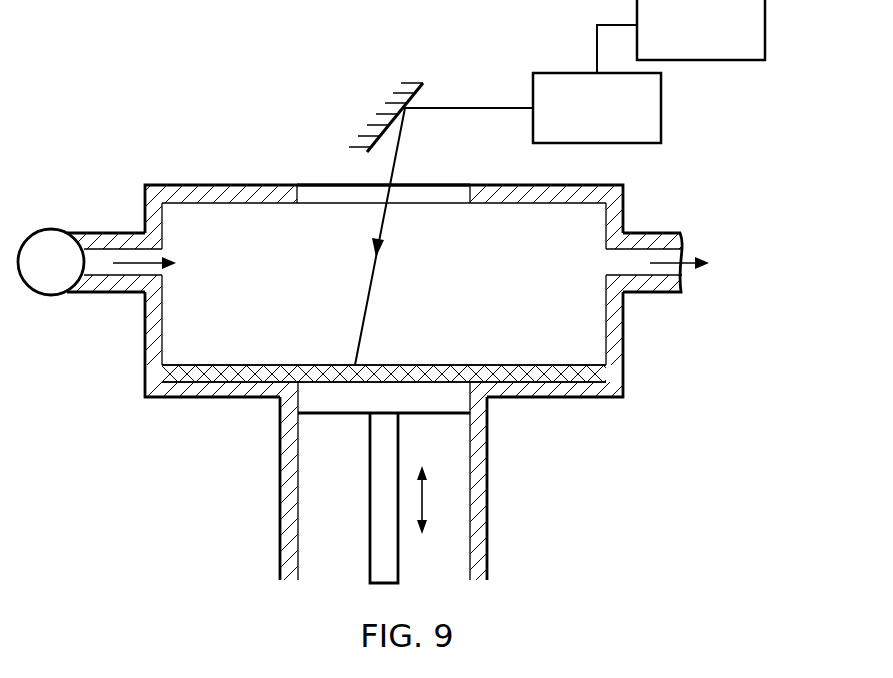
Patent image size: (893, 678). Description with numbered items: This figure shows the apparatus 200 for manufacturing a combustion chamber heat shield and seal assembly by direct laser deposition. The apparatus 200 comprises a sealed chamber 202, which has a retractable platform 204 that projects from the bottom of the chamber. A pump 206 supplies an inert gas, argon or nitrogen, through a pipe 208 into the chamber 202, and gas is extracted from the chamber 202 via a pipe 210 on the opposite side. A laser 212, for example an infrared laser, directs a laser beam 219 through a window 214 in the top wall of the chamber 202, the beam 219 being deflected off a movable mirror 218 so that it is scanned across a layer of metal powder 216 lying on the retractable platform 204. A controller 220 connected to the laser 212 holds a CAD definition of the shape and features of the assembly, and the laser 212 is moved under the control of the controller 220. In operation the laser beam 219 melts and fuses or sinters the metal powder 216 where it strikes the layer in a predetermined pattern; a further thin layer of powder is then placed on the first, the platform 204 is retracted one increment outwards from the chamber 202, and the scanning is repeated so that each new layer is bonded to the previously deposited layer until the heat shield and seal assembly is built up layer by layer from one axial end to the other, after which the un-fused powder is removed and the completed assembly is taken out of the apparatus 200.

The apparatus 200 is at (535, 448).
The sealed chamber 202 is at (615, 205).
The retractable platform 204 is at (337, 405).
The pump 206 is at (53, 247).
The pipe 208 is at (115, 287).
The pipe 210 is at (655, 292).
The laser 212 is at (597, 108).
The window 214 is at (335, 195).
The layer of metal powder 216 is at (225, 380).
The movable mirror 218 is at (405, 98).
The laser beam 219 is at (470, 108).
The controller 220 is at (681, 36).